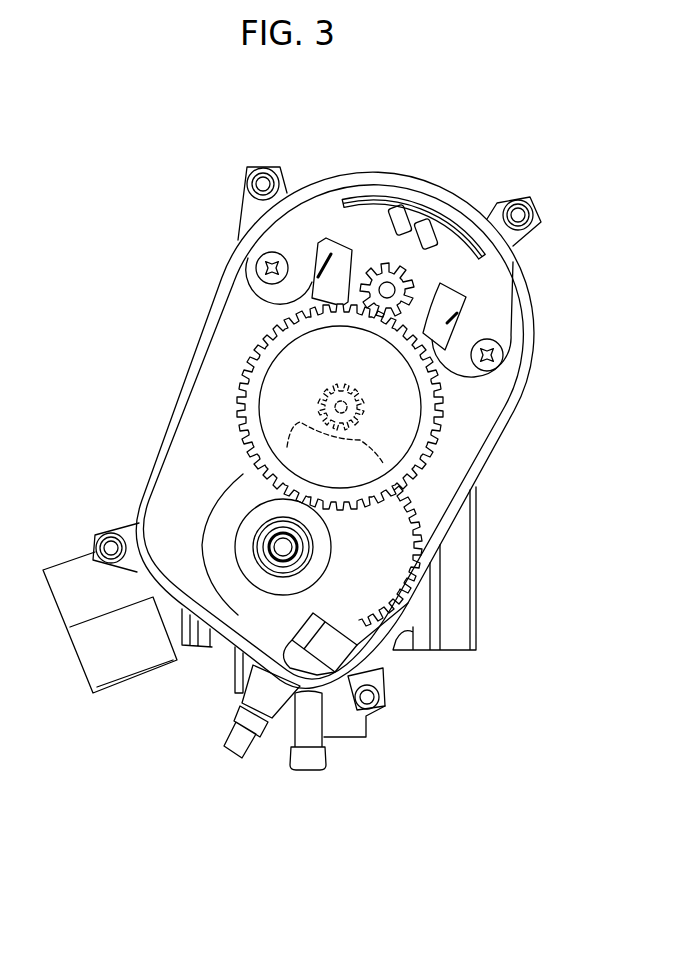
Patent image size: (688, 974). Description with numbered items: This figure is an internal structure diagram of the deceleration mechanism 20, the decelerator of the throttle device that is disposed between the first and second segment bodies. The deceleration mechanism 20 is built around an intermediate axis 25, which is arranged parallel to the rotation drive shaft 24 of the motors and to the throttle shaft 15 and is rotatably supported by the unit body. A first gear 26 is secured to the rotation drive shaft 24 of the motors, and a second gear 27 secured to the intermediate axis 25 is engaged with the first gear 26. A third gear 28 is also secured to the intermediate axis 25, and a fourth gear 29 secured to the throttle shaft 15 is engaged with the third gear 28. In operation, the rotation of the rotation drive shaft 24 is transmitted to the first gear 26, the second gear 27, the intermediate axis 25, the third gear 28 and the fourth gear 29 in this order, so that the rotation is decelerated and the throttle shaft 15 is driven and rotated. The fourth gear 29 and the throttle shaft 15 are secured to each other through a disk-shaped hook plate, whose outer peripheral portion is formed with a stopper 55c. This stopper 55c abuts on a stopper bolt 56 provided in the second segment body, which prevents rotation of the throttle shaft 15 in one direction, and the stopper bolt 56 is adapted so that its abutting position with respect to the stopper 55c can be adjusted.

The throttle shaft 15 is at (282, 545).
The deceleration mechanism 20 is at (195, 253).
The rotation drive shaft 24 is at (390, 288).
The intermediate axis 25 is at (330, 400).
The first gear 26 is at (386, 282).
The second gear 27 is at (437, 457).
The third gear 28 is at (360, 417).
The fourth gear 29 is at (413, 540).
The stopper 55c is at (338, 647).
The stopper bolt 56 is at (245, 758).